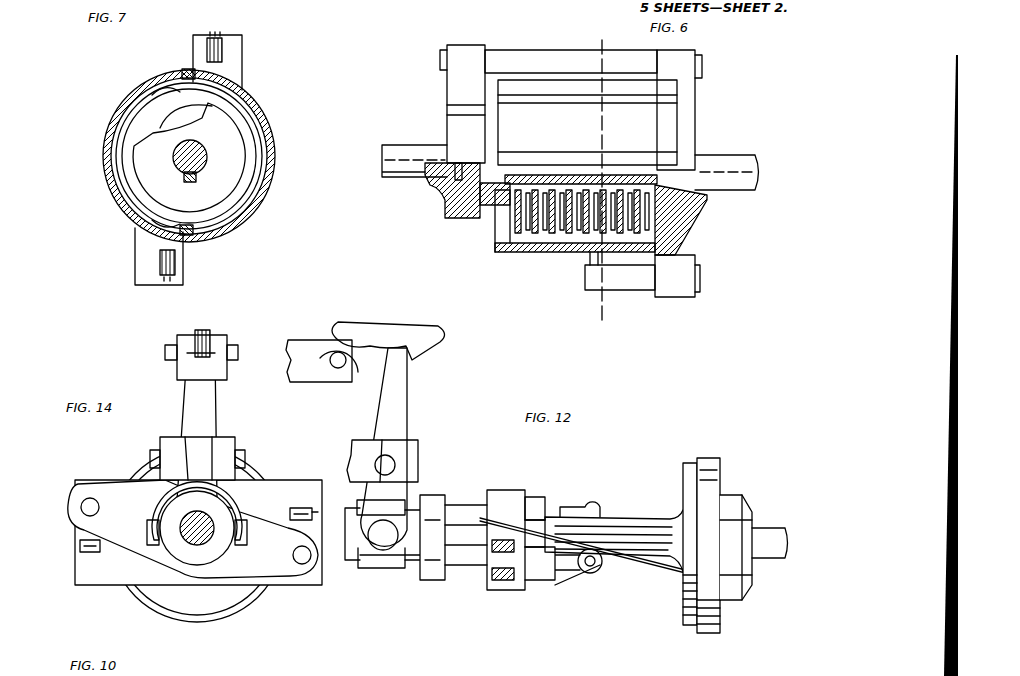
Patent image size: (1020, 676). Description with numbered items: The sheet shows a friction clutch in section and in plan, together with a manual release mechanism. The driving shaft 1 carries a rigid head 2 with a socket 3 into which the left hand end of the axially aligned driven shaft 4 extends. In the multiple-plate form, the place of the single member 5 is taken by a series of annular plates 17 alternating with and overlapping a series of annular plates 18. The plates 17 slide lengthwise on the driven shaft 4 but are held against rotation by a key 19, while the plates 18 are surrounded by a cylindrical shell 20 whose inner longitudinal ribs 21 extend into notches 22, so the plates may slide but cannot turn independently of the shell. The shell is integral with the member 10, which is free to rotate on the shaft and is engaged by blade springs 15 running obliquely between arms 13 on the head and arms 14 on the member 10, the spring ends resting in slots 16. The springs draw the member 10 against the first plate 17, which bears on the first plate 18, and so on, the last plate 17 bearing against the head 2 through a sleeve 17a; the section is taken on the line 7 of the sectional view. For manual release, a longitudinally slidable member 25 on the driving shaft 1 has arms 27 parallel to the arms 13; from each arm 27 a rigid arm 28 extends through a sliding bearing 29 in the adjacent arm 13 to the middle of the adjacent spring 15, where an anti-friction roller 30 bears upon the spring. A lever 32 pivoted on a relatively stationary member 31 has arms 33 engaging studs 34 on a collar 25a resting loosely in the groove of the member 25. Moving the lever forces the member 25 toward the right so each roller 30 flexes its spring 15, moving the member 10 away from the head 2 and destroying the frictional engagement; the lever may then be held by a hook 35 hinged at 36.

In FIG. 6, the driving shaft 1 is at (408, 154).
In FIG. 12, the driving shaft 1 is at (352, 524).
In FIG. 6, the head 2 is at (450, 200).
In FIG. 14, the head 2 is at (188, 578).
In FIG. 12, the head 2 is at (496, 584).
In FIG. 6, the socket 3 is at (452, 172).
In FIG. 7, the driven shaft 4 is at (172, 160).
In FIG. 6, the driven shaft 4 is at (735, 165).
In FIG. 12, the driven shaft 4 is at (762, 540).
In FIG. 12, the member 5 is at (630, 528).
In FIG. 6, the recess 7 is at (599, 177).
In FIG. 6, the member 10 is at (700, 208).
In FIG. 12, the member 10 is at (752, 576).
In FIG. 6, the arms 13 is at (456, 80).
In FIG. 14, the arms 13 is at (82, 566).
In FIG. 12, the arms 13 is at (500, 496).
In FIG. 7, the arms 14 is at (238, 50).
In FIG. 6, the arms 14 is at (688, 90).
In FIG. 12, the arms 14 is at (722, 592).
In FIG. 7, the blade spring 15 is at (224, 54).
In FIG. 6, the blade spring 15 is at (540, 64).
In FIG. 12, the blade spring 15 is at (630, 566).
In FIG. 7, the slots 16 is at (222, 46).
In FIG. 14, the slots 16 is at (80, 548).
In FIG. 12, the slots 16 is at (527, 494).
In FIG. 7, the annular plates 17 is at (224, 125).
In FIG. 6, the annular plates 17 is at (648, 216).
In FIG. 6, the sleeve 17a is at (492, 206).
In FIG. 7, the annular plates 18 is at (140, 120).
In FIG. 6, the annular plates 18 is at (524, 236).
In FIG. 7, the key 19 is at (200, 176).
In FIG. 6, the key 19 is at (545, 185).
In FIG. 7, the cylindrical shell 20 is at (238, 220).
In FIG. 6, the cylindrical shell 20 is at (560, 280).
In FIG. 7, the longitudinal ribs 21 is at (183, 70).
In FIG. 6, the longitudinal ribs 21 is at (592, 256).
In FIG. 7, the notches 22 is at (150, 94).
In FIG. 14, the longitudinally slidable member 25 is at (208, 548).
In FIG. 12, the longitudinally slidable member 25 is at (406, 562).
In FIG. 12, the collar 25a is at (386, 556).
In FIG. 14, the arms 27 is at (88, 492).
In FIG. 12, the arms 27 is at (432, 582).
In FIG. 14, the rigid arm 28 is at (92, 506).
In FIG. 12, the rigid arm 28 is at (578, 566).
In FIG. 12, the sliding bearing 29 is at (506, 582).
In FIG. 12, the anti-friction roller 30 is at (595, 504).
In FIG. 14, the relatively stationary member 31 is at (224, 444).
In FIG. 12, the relatively stationary member 31 is at (414, 458).
In FIG. 14, the lever 32 is at (202, 410).
In FIG. 12, the lever 32 is at (398, 402).
In FIG. 14, the arms 33 is at (165, 490).
In FIG. 12, the arms 33 is at (396, 506).
In FIG. 14, the studs 34 is at (152, 524).
In FIG. 12, the studs 34 is at (366, 566).
In FIG. 14, the hook 35 is at (208, 336).
In FIG. 12, the hook 35 is at (406, 340).
In FIG. 12, the hinge 36 is at (334, 372).